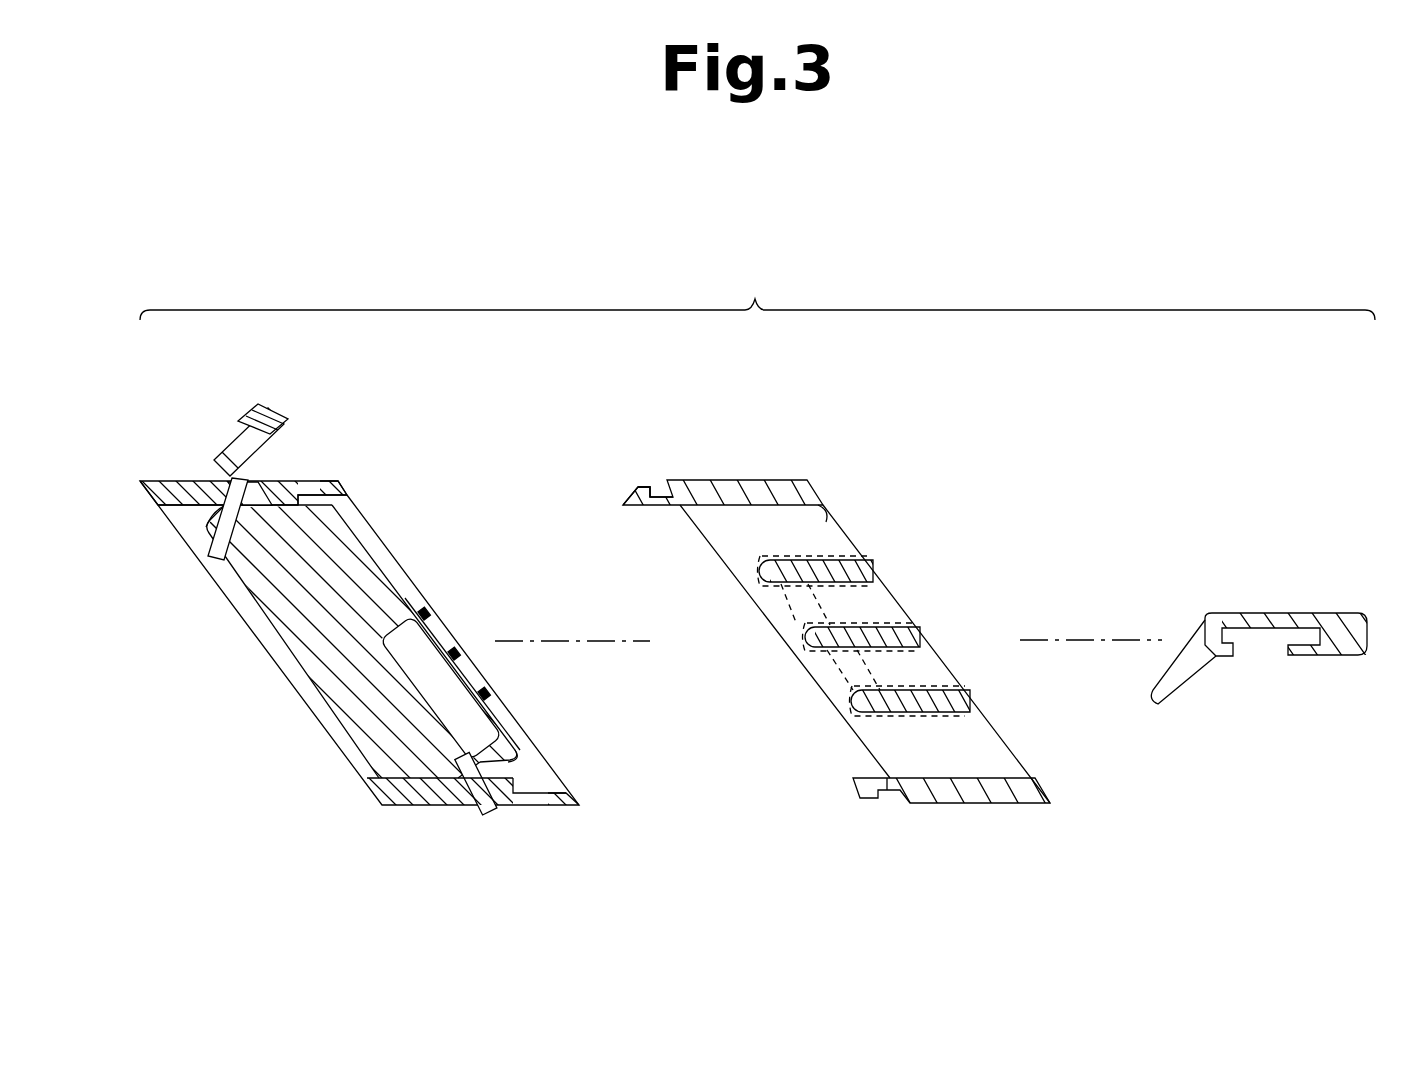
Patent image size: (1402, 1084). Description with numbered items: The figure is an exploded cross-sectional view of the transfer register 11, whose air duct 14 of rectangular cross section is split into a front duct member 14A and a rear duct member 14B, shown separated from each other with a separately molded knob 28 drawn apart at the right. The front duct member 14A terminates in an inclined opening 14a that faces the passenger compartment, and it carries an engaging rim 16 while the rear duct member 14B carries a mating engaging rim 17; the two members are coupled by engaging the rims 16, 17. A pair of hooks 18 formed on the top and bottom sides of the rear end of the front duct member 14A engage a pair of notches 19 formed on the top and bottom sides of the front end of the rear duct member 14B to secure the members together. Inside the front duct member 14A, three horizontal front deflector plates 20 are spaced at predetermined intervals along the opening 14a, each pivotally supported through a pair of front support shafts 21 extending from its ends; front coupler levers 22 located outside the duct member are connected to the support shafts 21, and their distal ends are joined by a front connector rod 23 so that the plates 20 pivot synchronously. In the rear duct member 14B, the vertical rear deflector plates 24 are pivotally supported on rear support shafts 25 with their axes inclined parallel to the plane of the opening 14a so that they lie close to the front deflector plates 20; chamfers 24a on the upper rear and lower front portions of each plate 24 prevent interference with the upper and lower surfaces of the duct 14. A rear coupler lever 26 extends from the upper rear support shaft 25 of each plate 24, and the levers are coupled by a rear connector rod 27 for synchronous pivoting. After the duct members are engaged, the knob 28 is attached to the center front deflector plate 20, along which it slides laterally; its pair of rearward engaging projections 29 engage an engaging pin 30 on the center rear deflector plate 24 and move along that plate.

The transfer register 11 is at (772, 285).
The air duct 14 is at (732, 478).
The front duct member 14A is at (795, 479).
The rear duct member 14B is at (160, 481).
The opening 14a is at (826, 516).
The engaging rim 16 is at (623, 496).
The engaging rim 17 is at (352, 492).
The hook 18 is at (652, 482).
The notch 19 is at (318, 488).
The front deflector plate 20 is at (884, 582).
The front support shaft 21 is at (868, 556).
The front coupler lever 22 is at (758, 562).
The front connector rod 23 is at (828, 660).
The rear deflector plate 24 is at (300, 657).
The chamfer 24a is at (210, 530).
The rear support shaft 25 is at (262, 452).
The rear coupler lever 26 is at (220, 452).
The rear connector rod 27 is at (250, 404).
The knob 28 is at (1345, 623).
The engaging projection 29 is at (1180, 675).
The engaging pin 30 is at (436, 630).